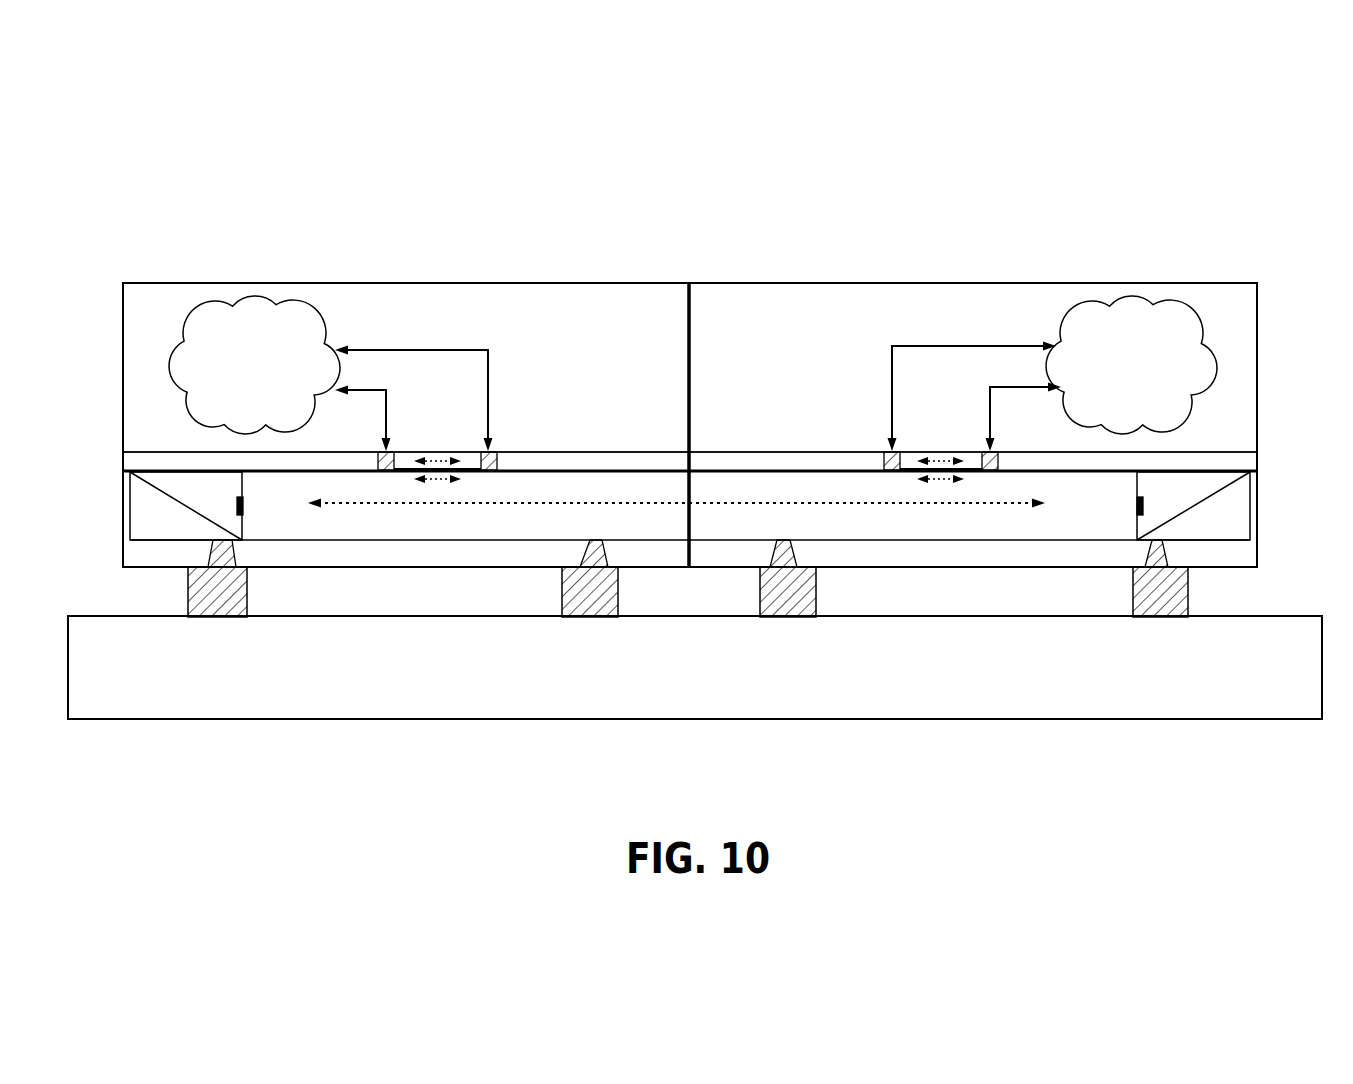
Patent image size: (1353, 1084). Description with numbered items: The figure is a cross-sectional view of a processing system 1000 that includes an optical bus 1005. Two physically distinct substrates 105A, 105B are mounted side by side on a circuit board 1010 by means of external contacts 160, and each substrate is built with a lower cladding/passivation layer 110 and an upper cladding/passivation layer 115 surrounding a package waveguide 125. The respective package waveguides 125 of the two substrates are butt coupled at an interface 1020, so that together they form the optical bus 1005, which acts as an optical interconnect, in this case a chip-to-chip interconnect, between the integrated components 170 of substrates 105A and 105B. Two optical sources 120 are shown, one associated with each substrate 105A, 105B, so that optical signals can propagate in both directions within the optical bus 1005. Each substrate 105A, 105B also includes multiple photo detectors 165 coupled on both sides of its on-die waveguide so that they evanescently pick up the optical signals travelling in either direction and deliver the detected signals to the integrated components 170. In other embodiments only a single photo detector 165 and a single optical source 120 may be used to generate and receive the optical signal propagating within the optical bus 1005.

The processing system 1000 is at (1100, 205).
The interface 1020 is at (692, 315).
The optical bus 1005 is at (762, 478).
The lower cladding/passivation layer 110 is at (123, 455).
The upper cladding/passivation layer 115 is at (123, 553).
The substrate 105A is at (666, 386).
The substrate 105B is at (776, 386).
The optical source 120 is at (197, 514).
The package waveguide 125 is at (296, 529).
The external contacts 160 is at (235, 599).
The photo detector 165 is at (383, 452).
The integrated components 170 is at (280, 307).
The circuit board 1010 is at (805, 681).